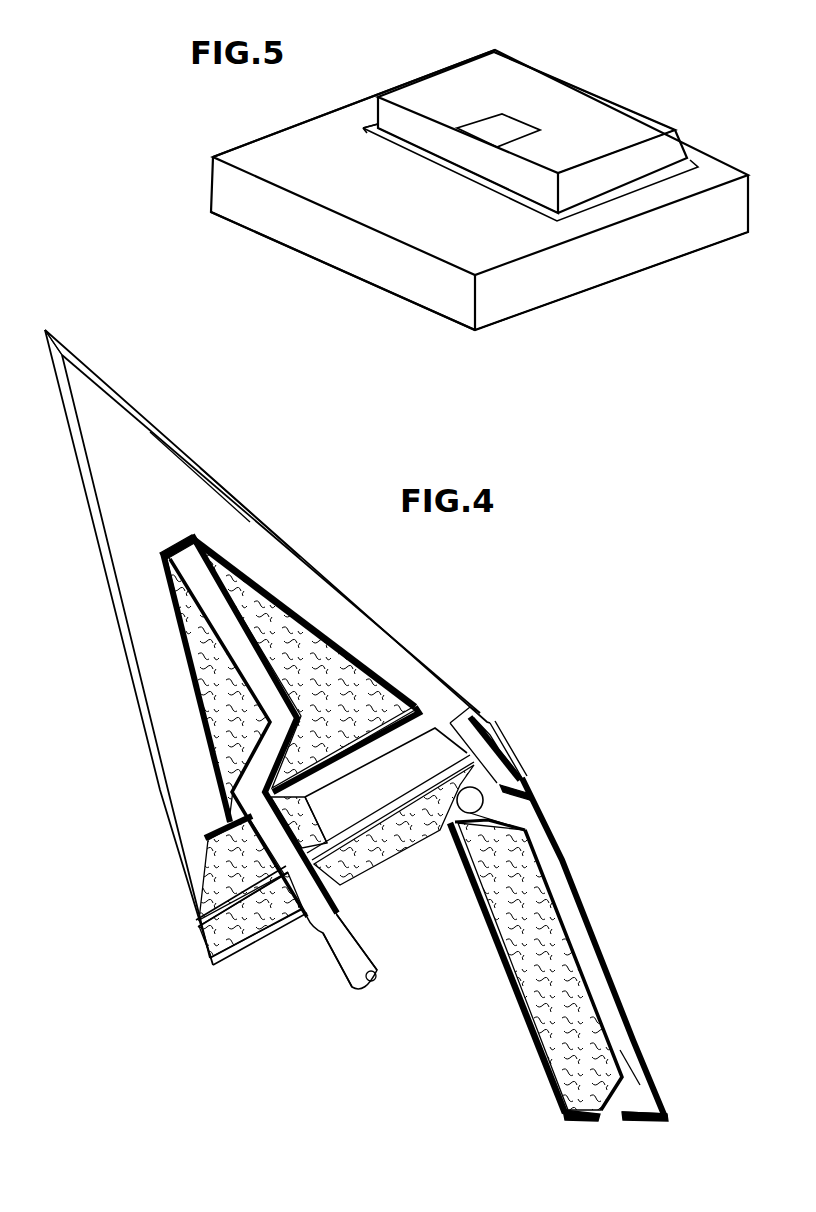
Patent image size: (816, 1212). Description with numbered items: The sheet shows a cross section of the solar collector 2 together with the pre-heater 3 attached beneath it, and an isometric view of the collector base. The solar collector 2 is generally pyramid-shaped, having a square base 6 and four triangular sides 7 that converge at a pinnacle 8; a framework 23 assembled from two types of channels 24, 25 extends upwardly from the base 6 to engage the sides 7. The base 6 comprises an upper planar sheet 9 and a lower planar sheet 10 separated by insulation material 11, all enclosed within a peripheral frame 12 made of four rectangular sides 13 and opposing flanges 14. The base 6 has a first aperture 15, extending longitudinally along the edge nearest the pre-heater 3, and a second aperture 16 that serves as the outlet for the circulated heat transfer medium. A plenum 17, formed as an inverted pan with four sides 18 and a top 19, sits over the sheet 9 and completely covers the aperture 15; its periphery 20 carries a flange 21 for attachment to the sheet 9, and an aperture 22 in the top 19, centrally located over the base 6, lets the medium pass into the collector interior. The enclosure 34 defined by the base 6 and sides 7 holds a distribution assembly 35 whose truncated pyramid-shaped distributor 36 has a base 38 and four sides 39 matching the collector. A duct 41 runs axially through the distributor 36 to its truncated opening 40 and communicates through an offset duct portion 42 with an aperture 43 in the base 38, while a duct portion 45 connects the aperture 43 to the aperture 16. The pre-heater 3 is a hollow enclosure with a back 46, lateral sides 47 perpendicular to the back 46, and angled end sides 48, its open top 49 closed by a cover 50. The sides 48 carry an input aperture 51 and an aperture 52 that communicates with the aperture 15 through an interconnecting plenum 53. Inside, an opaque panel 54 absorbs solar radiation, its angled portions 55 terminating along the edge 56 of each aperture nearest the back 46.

In FIG. 4, the solar collector 2 is at (98, 635).
In FIG. 4, the pre-heater 3 is at (566, 978).
In FIG. 4, the base 6 is at (532, 748).
In FIG. 4, the triangular sides 7 is at (138, 384).
In FIG. 4, the pinnacle 8 is at (45, 330).
In FIG. 5, the upper planar sheet 9 is at (295, 143).
In FIG. 4, the upper planar sheet 9 is at (200, 931).
In FIG. 5, the lower planar sheet 10 is at (560, 300).
In FIG. 4, the lower planar sheet 10 is at (250, 952).
In FIG. 4, the insulation material 11 is at (395, 850).
In FIG. 5, the peripheral frame 12 is at (401, 278).
In FIG. 5, the rectangular sides 13 is at (297, 242).
In FIG. 4, the rectangular sides 13 is at (527, 755).
In FIG. 4, the opposing flanges 14 is at (500, 783).
In FIG. 4, the first aperture 15 is at (495, 788).
In FIG. 4, the second aperture 16 is at (308, 922).
In FIG. 5, the plenum 17 is at (577, 106).
In FIG. 4, the plenum 17 is at (410, 753).
In FIG. 5, the sides 18 is at (643, 158).
In FIG. 5, the top 19 is at (505, 65).
In FIG. 5, the periphery 20 is at (440, 147).
In FIG. 5, the flange 21 is at (390, 142).
In FIG. 5, the aperture 22 is at (492, 133).
In FIG. 4, the framework 23 is at (236, 490).
In FIG. 4, the channel 24 is at (208, 898).
In FIG. 4, the channel 25 is at (190, 455).
In FIG. 4, the enclosure 34 is at (228, 695).
In FIG. 4, the distribution assembly 35 is at (173, 687).
In FIG. 4, the distributor 36 is at (275, 610).
In FIG. 4, the base 38 is at (413, 705).
In FIG. 4, the sides 39 is at (323, 635).
In FIG. 4, the opening 40 is at (165, 548).
In FIG. 4, the duct 41 is at (238, 582).
In FIG. 4, the offset duct portion 42 is at (205, 757).
In FIG. 4, the aperture 43 is at (240, 855).
In FIG. 4, the duct portion 45 is at (340, 870).
In FIG. 4, the back 46 is at (535, 1038).
In FIG. 4, the lateral sides 47 is at (530, 800).
In FIG. 4, the sides 48 is at (623, 1053).
In FIG. 4, the open top 49 is at (527, 780).
In FIG. 4, the cover 50 is at (600, 937).
In FIG. 4, the aperture 51 is at (607, 1120).
In FIG. 4, the aperture 52 is at (512, 815).
In FIG. 4, the interconnecting plenum 53 is at (473, 877).
In FIG. 4, the opaque panel 54 is at (593, 1000).
In FIG. 4, the angled portions 55 is at (527, 868).
In FIG. 4, the edge 56 is at (450, 827).